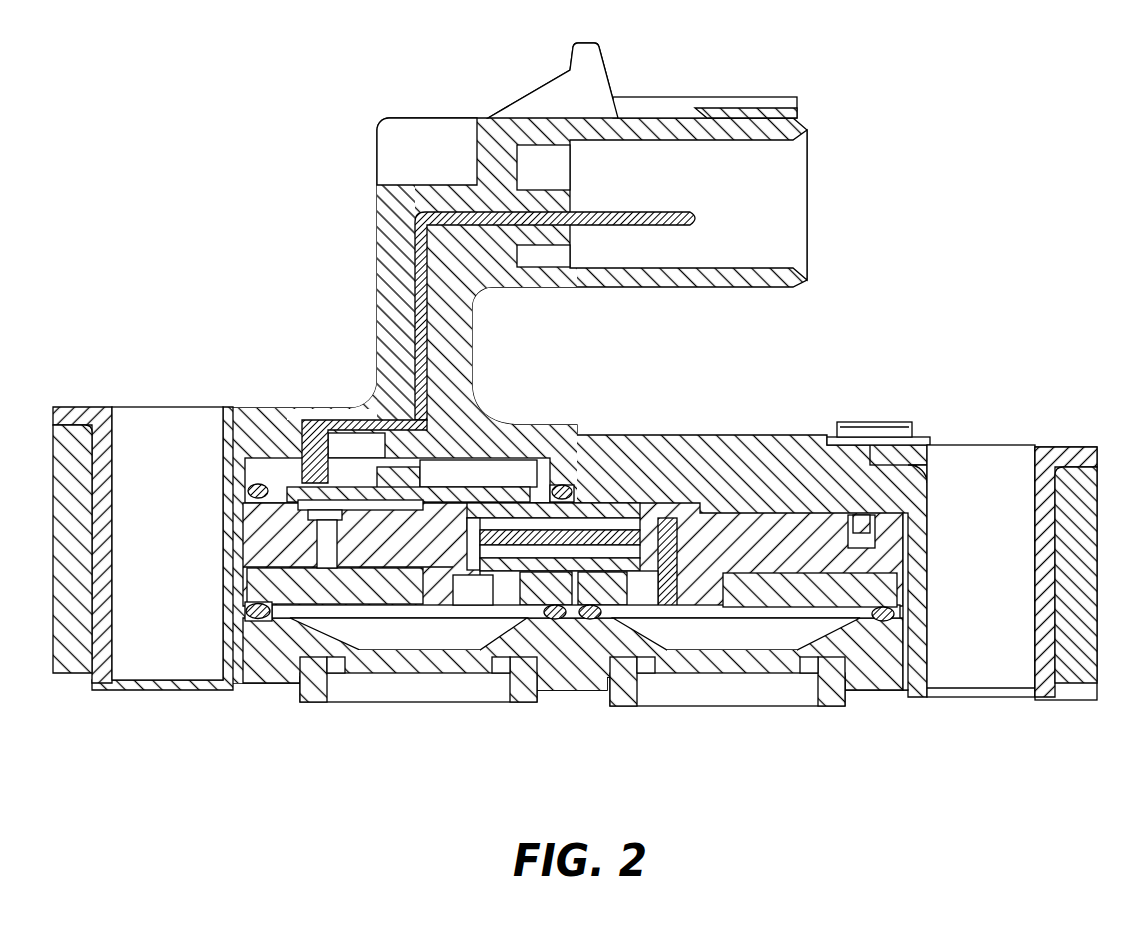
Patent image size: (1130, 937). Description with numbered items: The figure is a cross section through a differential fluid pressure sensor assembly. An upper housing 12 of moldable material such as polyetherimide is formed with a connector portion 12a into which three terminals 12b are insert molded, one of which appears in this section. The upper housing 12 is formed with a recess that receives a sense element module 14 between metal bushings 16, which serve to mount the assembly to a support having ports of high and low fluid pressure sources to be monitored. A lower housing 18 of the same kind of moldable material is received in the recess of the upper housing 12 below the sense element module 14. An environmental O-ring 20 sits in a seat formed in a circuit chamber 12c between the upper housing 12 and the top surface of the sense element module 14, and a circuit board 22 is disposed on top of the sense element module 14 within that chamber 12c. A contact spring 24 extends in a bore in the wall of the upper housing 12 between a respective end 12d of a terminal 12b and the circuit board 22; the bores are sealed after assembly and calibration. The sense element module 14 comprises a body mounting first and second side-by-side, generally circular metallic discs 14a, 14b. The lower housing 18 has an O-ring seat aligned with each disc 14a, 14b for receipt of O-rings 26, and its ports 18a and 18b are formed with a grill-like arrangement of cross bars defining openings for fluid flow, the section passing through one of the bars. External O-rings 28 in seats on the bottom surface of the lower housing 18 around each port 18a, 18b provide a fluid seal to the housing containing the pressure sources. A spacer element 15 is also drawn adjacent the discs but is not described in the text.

The upper housing 12 is at (790, 434).
The connector portion 12a is at (377, 232).
The insert molded terminal 12b is at (668, 212).
The circuit chamber 12c is at (515, 470).
The terminal end 12d is at (345, 420).
The sense element module 14 is at (750, 523).
The first metallic disc 14a is at (373, 588).
The second metallic disc 14b is at (748, 598).
The spacer 15 is at (472, 604).
The metal bushing 16 is at (90, 406).
The lower housing 18 is at (578, 672).
The port 18a is at (428, 662).
The port 18b is at (672, 662).
The environmental O-ring 20 is at (567, 487).
The circuit board 22 is at (457, 497).
The contact spring 24 is at (300, 453).
The O-ring 26 is at (257, 622).
The external O-ring 28 is at (316, 703).